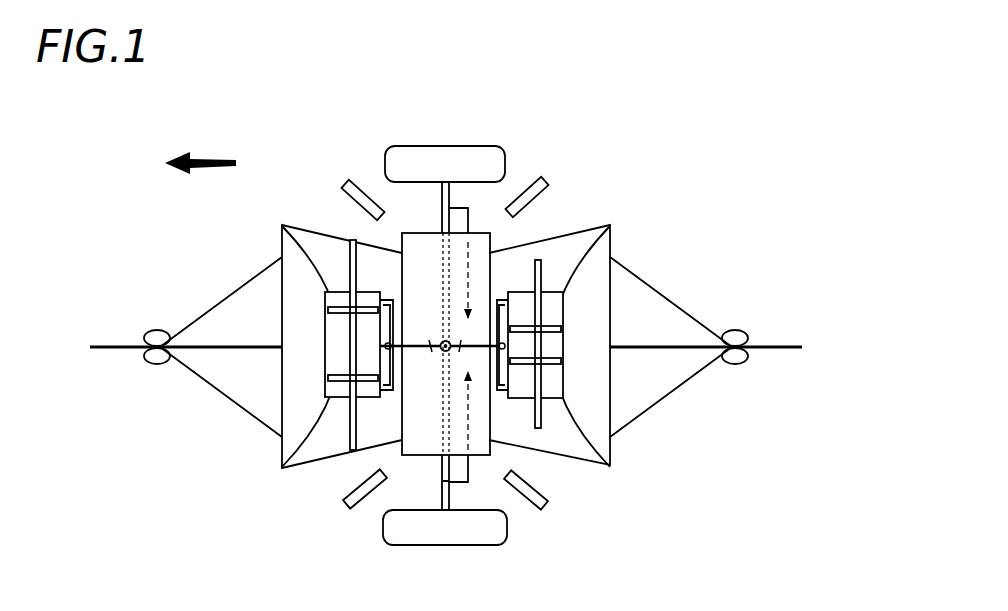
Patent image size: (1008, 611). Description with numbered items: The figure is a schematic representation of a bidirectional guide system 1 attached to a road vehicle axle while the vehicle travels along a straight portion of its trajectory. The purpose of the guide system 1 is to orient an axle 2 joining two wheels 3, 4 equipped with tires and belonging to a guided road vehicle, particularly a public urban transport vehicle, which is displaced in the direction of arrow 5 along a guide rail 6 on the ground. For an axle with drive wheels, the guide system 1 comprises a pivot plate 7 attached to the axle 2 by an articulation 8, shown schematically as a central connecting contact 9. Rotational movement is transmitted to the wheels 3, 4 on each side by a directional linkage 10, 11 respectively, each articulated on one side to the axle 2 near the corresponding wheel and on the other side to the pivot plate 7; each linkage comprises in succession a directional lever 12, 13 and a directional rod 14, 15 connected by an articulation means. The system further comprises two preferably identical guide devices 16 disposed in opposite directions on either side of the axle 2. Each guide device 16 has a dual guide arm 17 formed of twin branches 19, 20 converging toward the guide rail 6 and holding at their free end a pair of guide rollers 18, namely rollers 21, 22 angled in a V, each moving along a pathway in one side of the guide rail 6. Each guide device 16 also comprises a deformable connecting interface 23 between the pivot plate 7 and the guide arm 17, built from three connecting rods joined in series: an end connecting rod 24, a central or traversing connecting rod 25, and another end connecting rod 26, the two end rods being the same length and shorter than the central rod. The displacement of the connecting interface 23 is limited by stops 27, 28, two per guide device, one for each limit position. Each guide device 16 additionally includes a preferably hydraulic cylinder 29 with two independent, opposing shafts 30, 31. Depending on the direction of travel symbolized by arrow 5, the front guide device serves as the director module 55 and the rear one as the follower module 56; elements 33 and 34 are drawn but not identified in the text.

The bidirectional guide system 1 is at (786, 95).
The axle 2 is at (442, 196).
The wheel 3 is at (443, 160).
The wheel 4 is at (447, 527).
The arrow 5 is at (208, 156).
The guide rail 6 is at (92, 345).
The pivot plate 7 is at (421, 241).
The articulation 8 is at (437, 359).
The central connecting contact 9 is at (441, 362).
The directional linkage 10 is at (473, 201).
The directional linkage 11 is at (474, 486).
The directional lever 12 is at (468, 205).
The directional lever 13 is at (458, 484).
The directional rod 14 is at (483, 198).
The directional rod 15 is at (473, 473).
The guide device 16 is at (449, 348).
The guide arm 17 is at (245, 279).
The guide roller 18 is at (453, 347).
The branch 19 is at (225, 296).
The branch 20 is at (228, 400).
The guide roller 21 is at (157, 334).
The guide roller 22 is at (155, 362).
The deformable connecting interface 23 is at (278, 331).
The end connecting rod 24 is at (341, 284).
The central connecting rod 25 is at (281, 401).
The end connecting rod 26 is at (310, 462).
The stop 27 is at (350, 186).
The stop 28 is at (352, 504).
The cylinder 29 is at (300, 232).
The shaft 30 is at (352, 238).
The shaft 31 is at (355, 452).
The upper cross bar 33 is at (280, 239).
The lower cross bar 34 is at (283, 455).
The director module 55 is at (449, 348).
The follower module 56 is at (716, 454).